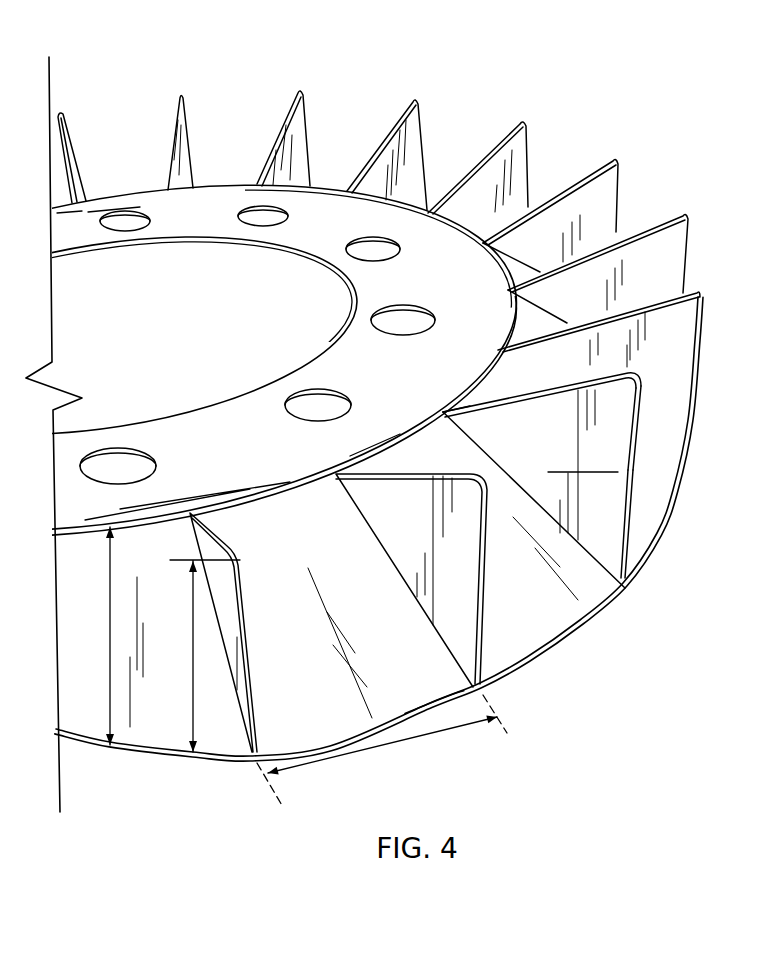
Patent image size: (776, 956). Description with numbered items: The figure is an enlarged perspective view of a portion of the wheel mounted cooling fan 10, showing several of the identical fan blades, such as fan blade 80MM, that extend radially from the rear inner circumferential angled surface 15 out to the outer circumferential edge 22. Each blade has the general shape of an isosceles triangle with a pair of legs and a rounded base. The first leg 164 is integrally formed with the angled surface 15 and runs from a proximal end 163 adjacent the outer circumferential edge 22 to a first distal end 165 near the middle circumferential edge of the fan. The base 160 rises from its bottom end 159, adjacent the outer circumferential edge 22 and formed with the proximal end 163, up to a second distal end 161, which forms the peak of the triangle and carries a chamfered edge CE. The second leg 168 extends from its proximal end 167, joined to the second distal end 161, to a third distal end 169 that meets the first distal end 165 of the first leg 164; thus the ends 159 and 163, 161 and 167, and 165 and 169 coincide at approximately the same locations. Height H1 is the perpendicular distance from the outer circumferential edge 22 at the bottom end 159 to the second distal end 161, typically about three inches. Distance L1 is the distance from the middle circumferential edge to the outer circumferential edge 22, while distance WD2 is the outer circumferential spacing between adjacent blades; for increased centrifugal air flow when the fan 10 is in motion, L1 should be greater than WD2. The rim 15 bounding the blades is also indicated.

The wheel mounted cooling fan 10 is at (575, 88).
The rear inner circumferential angled surface 15 is at (428, 684).
The outer circumferential edge 22 is at (627, 587).
The bottom end 159 is at (640, 576).
The base 160 is at (637, 460).
The second distal end 161 is at (643, 387).
The proximal end 163 is at (623, 587).
The first leg 164 is at (392, 548).
The first distal end 165 is at (428, 417).
The proximal end 167 is at (648, 380).
The second leg 168 is at (517, 399).
The third distal end 169 is at (443, 410).
The chamfered edge CE is at (250, 643).
The distance L1 is at (94, 636).
The height H1 is at (197, 656).
The distance WD2 is at (382, 751).
The fan blade 80MM is at (583, 459).